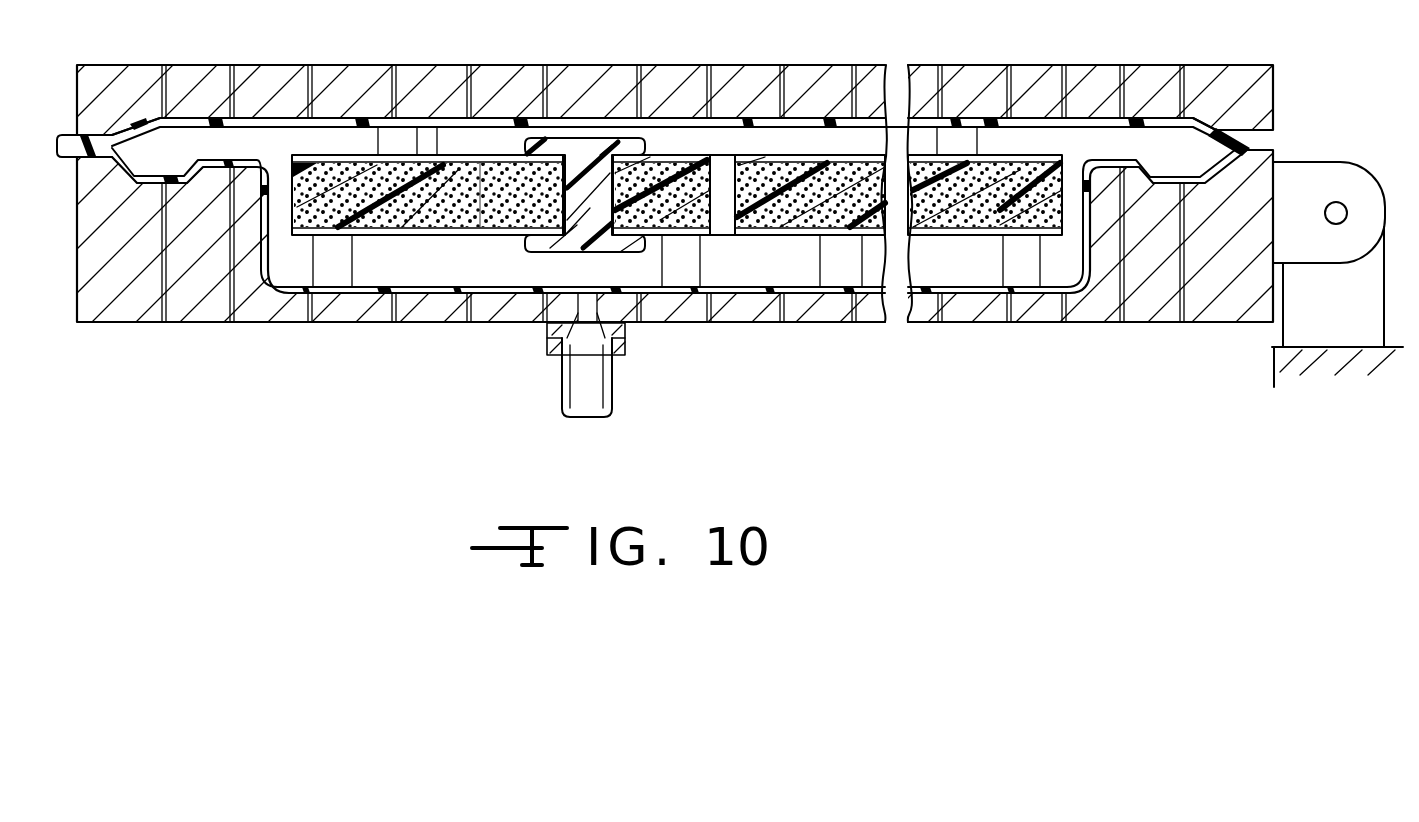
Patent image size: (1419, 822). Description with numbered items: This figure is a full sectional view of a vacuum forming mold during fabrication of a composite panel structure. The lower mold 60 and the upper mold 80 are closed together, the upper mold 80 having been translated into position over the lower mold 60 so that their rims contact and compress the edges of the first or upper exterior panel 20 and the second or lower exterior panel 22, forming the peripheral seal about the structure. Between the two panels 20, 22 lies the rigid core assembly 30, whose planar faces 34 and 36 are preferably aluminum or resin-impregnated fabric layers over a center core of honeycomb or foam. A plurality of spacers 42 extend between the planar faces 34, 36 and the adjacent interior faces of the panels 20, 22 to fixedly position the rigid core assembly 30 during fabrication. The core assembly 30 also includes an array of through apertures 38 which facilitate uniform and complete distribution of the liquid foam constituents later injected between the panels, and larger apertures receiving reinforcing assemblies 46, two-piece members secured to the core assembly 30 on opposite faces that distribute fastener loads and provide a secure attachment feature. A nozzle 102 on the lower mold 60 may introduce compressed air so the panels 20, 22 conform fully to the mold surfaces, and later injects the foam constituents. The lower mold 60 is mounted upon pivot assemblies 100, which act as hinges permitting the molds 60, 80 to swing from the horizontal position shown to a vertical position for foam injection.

The first or upper exterior skin or panel 20 is at (985, 295).
The second or lower exterior skin or panel 22 is at (800, 120).
The rigid core assembly 30 is at (1048, 158).
The planar face 34 is at (437, 152).
The planar face 36 is at (391, 237).
The through apertures 38 is at (468, 217).
The spacers 42 is at (393, 138).
The reinforcing assemblies 46 is at (582, 150).
The lower mold 60 is at (118, 305).
The upper mold 80 is at (655, 68).
The pivot assemblies 100 is at (1362, 162).
The nozzle 102 is at (573, 378).